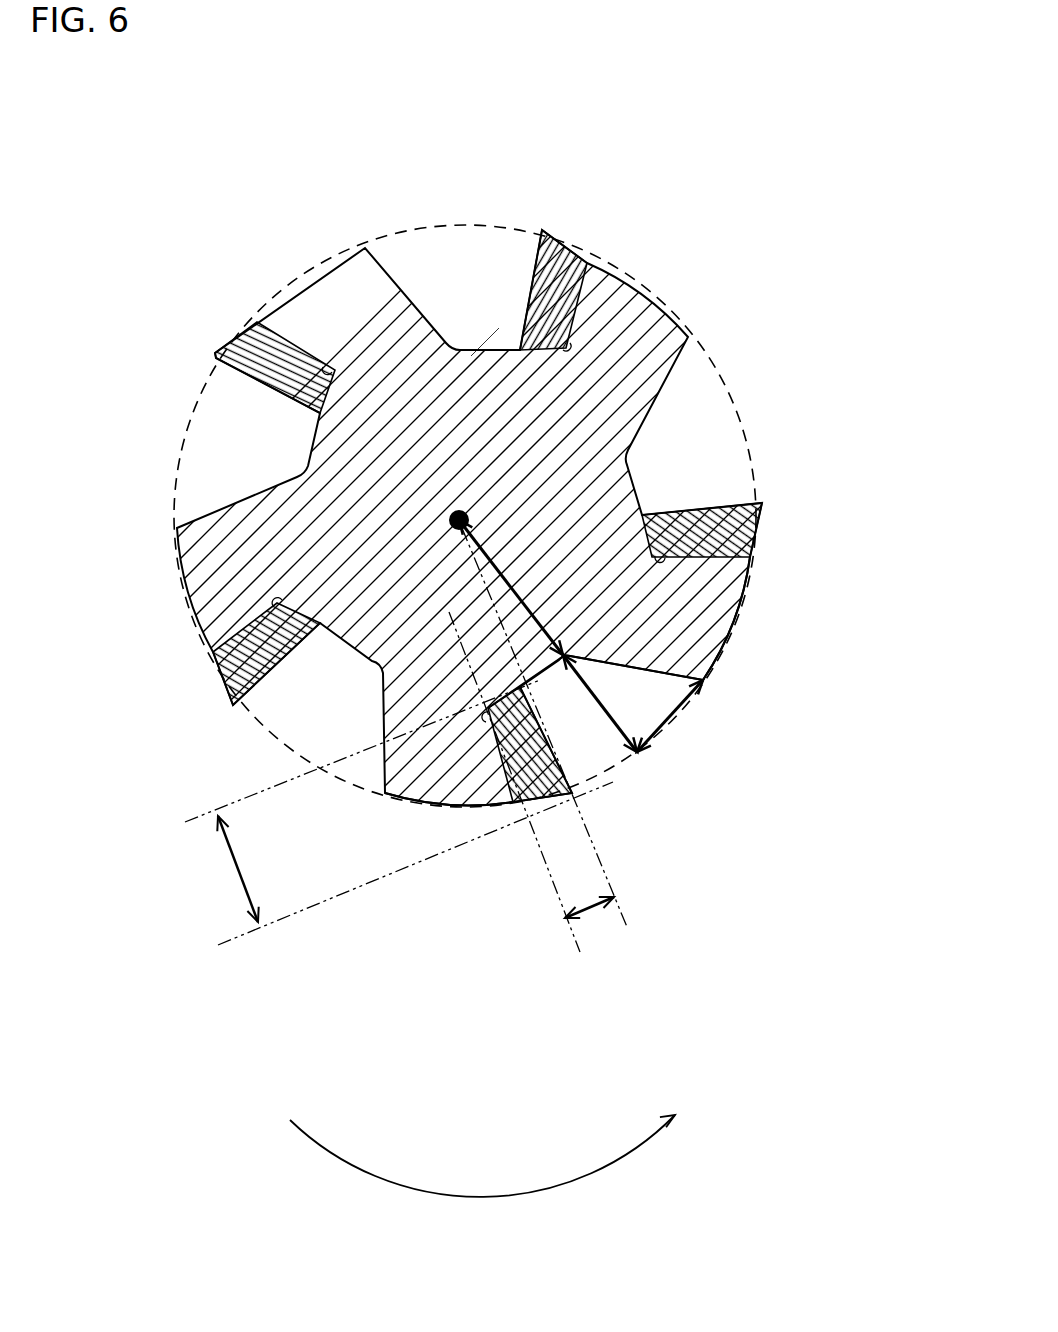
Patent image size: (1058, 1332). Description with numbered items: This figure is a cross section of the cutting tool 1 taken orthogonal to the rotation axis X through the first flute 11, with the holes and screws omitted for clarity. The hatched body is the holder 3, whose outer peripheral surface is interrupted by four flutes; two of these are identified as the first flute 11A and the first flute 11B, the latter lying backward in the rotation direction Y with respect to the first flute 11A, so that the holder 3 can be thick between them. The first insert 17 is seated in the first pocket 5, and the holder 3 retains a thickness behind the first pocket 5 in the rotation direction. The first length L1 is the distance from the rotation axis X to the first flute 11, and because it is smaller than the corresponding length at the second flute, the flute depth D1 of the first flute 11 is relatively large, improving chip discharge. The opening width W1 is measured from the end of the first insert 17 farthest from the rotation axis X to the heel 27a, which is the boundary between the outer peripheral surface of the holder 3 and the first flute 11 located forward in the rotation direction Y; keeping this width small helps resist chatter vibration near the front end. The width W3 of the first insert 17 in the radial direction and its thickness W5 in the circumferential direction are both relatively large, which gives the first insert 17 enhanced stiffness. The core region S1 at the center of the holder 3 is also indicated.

The cutting tool 1 is at (640, 197).
The holder 3 is at (300, 318).
The first pocket 5 is at (484, 708).
The first flute 11 is at (478, 516).
The first flute 11A is at (567, 657).
The first flute 11B is at (367, 655).
The first insert 17 is at (516, 797).
The heel 27a is at (703, 680).
The core portion S1 is at (495, 377).
The rotation axis X is at (452, 518).
The first length L1 is at (522, 530).
The flute depth D1 is at (605, 718).
The opening width W1 is at (668, 718).
The width W3 is at (236, 872).
The thickness W5 is at (590, 908).
The rotation direction Y is at (482, 1191).